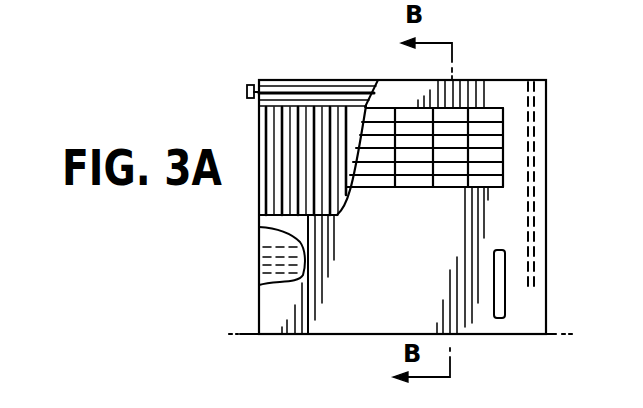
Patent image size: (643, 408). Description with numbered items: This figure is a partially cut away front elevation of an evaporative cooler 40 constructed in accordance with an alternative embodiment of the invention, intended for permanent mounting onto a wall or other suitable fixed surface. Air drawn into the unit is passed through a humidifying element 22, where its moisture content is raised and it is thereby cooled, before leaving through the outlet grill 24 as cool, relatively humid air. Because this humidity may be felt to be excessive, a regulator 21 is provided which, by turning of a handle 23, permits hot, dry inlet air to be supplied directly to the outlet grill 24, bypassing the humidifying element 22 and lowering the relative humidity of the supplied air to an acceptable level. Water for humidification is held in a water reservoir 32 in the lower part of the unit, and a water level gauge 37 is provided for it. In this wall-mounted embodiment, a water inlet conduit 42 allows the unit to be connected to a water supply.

The regulator 21 is at (293, 84).
The humidifying element 22 is at (309, 124).
The handle 23 is at (247, 89).
The outlet grill 24 is at (448, 133).
The water reservoir 32 is at (259, 256).
The water level gauge 37 is at (505, 287).
The evaporative cooler 40 is at (250, 302).
The water inlet conduit 42 is at (533, 168).